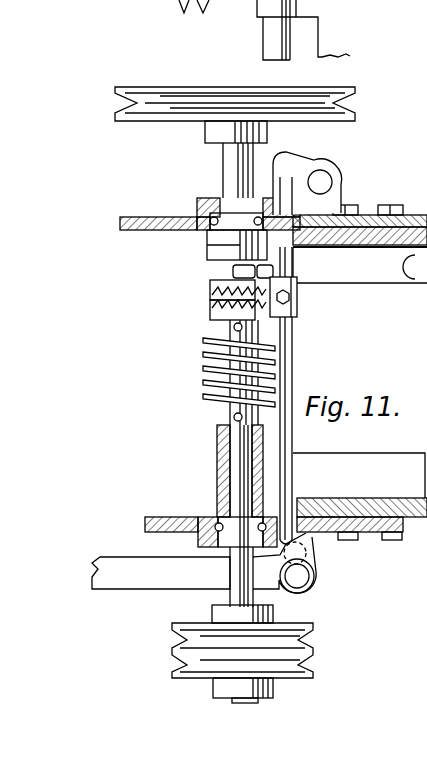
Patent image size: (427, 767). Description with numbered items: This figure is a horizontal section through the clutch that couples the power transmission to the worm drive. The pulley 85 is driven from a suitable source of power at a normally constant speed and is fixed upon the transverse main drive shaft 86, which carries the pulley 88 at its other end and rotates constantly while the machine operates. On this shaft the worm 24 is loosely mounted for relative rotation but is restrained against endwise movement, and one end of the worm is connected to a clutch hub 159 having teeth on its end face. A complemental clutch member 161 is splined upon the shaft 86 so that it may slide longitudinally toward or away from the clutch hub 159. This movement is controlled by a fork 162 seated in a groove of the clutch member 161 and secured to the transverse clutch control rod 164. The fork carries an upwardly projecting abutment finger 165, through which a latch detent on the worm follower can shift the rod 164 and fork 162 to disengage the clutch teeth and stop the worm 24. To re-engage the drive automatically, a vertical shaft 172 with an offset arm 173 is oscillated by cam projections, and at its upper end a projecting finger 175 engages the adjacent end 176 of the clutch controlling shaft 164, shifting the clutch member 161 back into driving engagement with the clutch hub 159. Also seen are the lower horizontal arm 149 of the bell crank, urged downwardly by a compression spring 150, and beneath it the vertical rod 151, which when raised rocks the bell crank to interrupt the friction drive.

The pulley 85 is at (213, 82).
The adjacent end of clutch controlling shaft 176 is at (272, 182).
The projecting finger 175 is at (295, 164).
The vertical shaft 172 is at (323, 181).
The offset arm 173 is at (363, 193).
The fork 162 is at (233, 270).
The abutment finger 165 is at (262, 272).
The clutch member 161 is at (210, 288).
The clutch hub 159 is at (210, 307).
The worm 24 is at (203, 362).
The clutch control rod 164 is at (292, 350).
The main drive shaft 86 is at (237, 482).
The horizontal arm 149 is at (142, 550).
The vertical rod 151 is at (310, 553).
The compression spring 150 is at (315, 574).
The pulley 88 is at (185, 642).